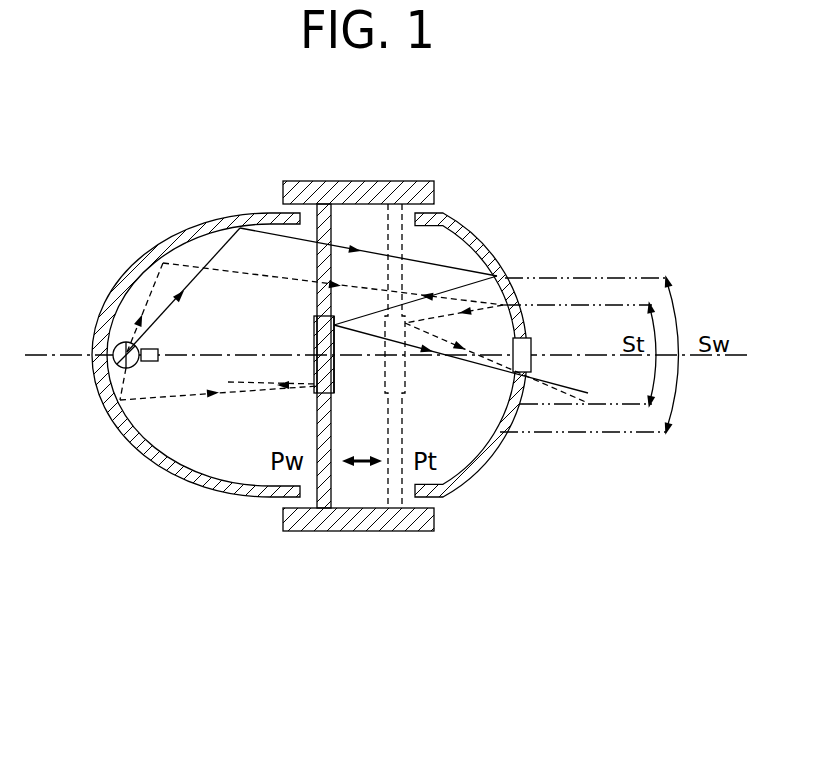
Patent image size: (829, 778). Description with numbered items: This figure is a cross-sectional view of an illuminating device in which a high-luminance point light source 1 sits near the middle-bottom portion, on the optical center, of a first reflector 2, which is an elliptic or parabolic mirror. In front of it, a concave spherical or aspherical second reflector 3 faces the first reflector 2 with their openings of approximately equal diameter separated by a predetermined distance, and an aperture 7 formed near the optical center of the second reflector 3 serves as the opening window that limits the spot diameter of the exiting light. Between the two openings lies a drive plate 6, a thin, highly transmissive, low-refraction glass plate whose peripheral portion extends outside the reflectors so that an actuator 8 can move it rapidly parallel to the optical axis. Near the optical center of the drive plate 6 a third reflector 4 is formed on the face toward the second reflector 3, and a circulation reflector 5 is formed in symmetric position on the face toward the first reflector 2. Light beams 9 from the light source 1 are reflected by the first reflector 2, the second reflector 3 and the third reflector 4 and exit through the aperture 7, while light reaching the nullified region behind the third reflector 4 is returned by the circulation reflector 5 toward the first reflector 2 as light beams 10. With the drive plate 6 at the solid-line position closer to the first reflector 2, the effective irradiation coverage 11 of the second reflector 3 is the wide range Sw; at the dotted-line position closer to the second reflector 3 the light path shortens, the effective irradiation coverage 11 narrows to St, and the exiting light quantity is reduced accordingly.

The light source 1 is at (118, 338).
The first reflector 2 is at (152, 455).
The second reflector 3 is at (492, 452).
The third reflector 4 is at (335, 365).
The circulation reflector 5 is at (313, 340).
The drive plate 6 is at (320, 497).
The aperture 7 is at (521, 350).
The actuator 8 is at (348, 520).
The light beams 9 is at (585, 389).
The light beams 10 is at (228, 383).
The effective irradiation coverage 11 is at (682, 312).